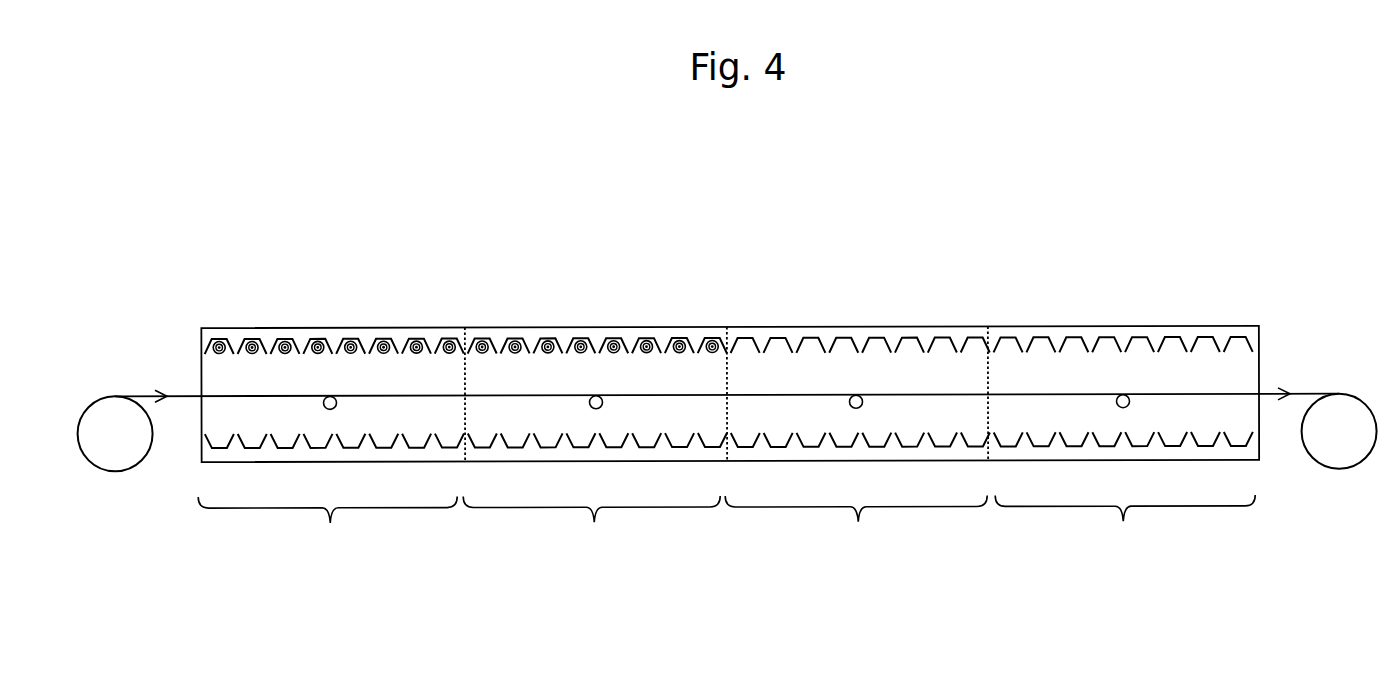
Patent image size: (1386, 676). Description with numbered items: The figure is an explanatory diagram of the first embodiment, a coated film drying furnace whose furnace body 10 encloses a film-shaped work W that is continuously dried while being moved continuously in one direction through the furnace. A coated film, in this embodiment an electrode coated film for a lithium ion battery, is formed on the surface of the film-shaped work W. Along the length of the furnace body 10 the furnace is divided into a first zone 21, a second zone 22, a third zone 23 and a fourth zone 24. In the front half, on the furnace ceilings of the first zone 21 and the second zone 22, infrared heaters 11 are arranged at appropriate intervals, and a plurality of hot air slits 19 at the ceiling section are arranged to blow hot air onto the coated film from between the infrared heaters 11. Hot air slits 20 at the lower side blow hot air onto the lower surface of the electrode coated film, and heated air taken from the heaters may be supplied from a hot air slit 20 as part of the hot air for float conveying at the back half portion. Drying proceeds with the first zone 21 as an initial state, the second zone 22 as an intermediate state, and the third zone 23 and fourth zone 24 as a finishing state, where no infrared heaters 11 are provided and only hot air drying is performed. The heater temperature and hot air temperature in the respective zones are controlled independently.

The furnace body 10 is at (623, 327).
The infrared heater 11 is at (350, 340).
The hot air slit 19 is at (858, 342).
The hot air slit 20 is at (397, 430).
The film-shaped work W is at (768, 395).
The first zone 21 is at (332, 448).
The second zone 22 is at (595, 447).
The third zone 23 is at (857, 447).
The fourth zone 24 is at (1125, 531).